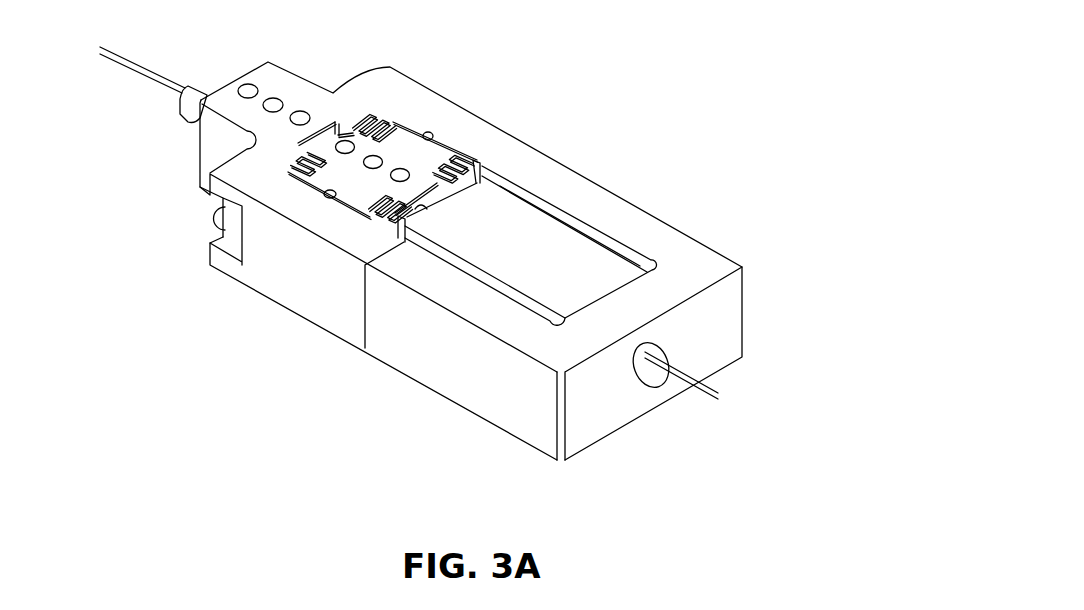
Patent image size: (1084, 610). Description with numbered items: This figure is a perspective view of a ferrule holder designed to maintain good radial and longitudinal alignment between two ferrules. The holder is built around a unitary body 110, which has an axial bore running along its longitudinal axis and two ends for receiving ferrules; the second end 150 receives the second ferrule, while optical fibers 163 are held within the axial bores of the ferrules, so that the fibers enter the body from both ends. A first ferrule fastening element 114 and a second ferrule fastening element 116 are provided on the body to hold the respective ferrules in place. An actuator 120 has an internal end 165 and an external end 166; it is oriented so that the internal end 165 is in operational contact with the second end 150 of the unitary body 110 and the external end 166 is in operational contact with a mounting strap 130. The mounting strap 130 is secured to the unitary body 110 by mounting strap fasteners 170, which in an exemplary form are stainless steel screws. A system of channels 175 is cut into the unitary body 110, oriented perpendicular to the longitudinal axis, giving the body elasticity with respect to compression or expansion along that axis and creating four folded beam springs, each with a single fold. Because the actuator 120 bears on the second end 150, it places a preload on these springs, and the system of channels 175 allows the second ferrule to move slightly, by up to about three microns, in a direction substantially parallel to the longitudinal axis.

The unitary body 110 is at (280, 275).
The first ferrule fastening element 114 is at (301, 116).
The second ferrule fastening element 116 is at (409, 176).
The actuator 120 is at (517, 220).
The mounting strap 130 is at (636, 234).
The second end 150 is at (498, 197).
The optical fibers 163 is at (163, 88).
The internal end 165 is at (420, 209).
The external end 166 is at (637, 291).
The mounting strap fasteners 170 is at (233, 223).
The system of channels 175 is at (478, 172).